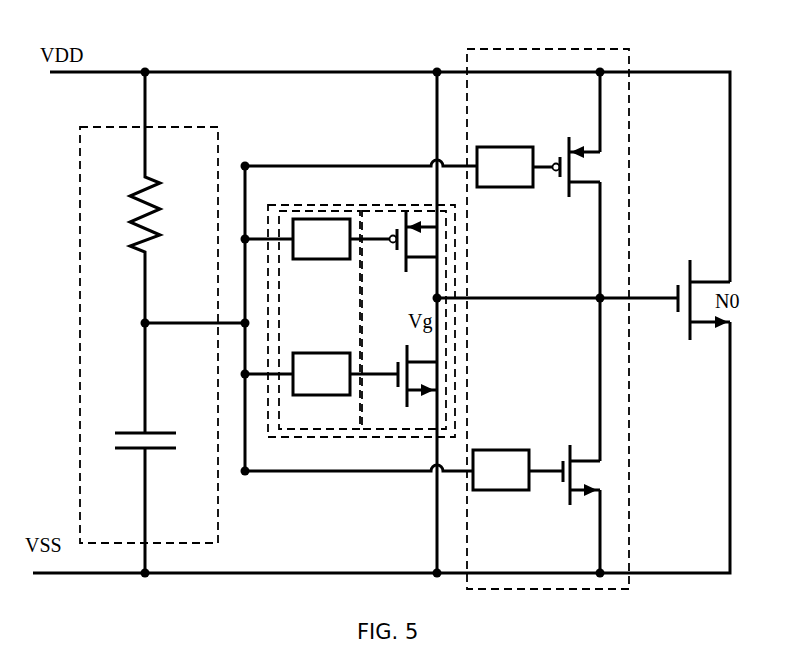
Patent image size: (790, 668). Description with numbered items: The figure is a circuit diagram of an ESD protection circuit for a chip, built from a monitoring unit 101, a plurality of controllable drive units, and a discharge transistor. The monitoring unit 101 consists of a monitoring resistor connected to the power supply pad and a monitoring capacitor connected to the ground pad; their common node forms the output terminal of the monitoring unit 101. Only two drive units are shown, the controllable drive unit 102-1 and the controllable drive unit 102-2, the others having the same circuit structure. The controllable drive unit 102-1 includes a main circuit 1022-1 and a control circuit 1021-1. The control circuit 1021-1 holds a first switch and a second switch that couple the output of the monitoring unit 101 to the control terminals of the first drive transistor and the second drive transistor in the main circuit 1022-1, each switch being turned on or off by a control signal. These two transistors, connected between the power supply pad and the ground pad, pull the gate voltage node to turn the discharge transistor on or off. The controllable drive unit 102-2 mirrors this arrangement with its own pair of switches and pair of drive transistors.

The monitoring unit 101 is at (173, 102).
The controllable drive unit 102-1 is at (335, 183).
The control circuit 1021-1 is at (318, 429).
The main circuit 1022-1 is at (386, 429).
The controllable drive unit 102-2 is at (529, 49).